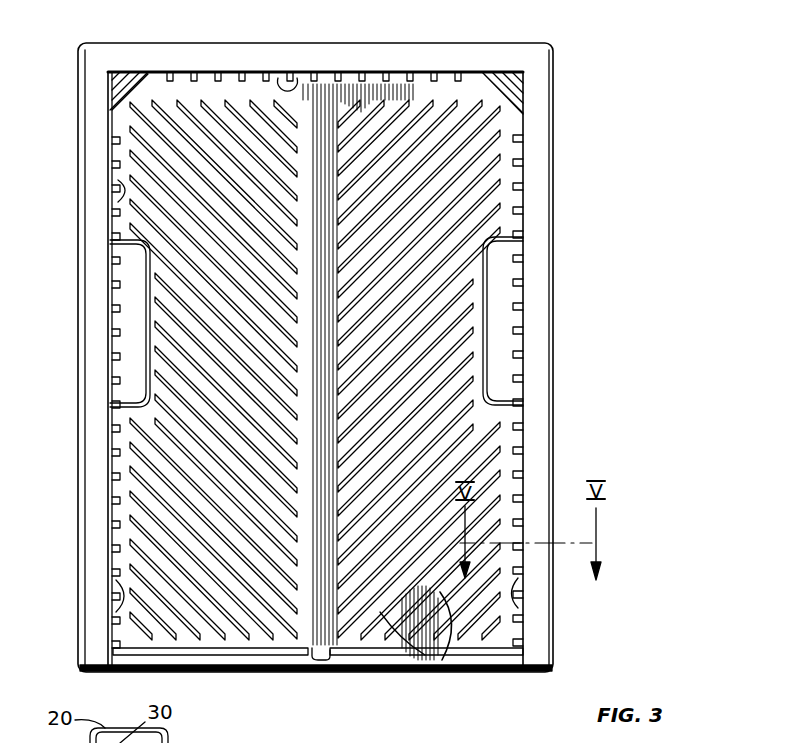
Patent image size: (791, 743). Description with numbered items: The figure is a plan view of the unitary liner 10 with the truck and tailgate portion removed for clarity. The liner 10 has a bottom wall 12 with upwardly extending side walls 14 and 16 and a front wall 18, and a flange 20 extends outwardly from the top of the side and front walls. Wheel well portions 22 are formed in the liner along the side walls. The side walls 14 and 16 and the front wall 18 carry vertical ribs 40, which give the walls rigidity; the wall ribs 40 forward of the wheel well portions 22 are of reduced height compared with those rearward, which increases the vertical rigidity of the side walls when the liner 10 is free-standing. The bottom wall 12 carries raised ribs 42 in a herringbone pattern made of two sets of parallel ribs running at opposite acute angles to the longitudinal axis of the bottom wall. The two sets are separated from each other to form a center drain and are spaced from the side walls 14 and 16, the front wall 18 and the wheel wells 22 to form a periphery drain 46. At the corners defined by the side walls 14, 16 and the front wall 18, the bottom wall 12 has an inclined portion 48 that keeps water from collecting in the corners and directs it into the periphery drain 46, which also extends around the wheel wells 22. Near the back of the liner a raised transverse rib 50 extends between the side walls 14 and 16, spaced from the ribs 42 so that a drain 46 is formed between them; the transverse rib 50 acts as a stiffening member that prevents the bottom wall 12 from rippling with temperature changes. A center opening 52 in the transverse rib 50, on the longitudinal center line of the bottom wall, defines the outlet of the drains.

The unitary liner 10 is at (586, 286).
The bottom wall 12 is at (442, 594).
The side wall 14 is at (115, 198).
The side wall 16 is at (513, 205).
The front wall 18 is at (276, 76).
The flange 20 is at (407, 50).
The wheel well portion 22 is at (123, 317).
The vertical ribs 40 is at (118, 613).
The raised ribs 42 is at (392, 620).
The periphery drain 46 is at (513, 150).
The inclined portion 48 is at (123, 92).
The transverse rib 50 is at (227, 655).
The center opening 52 is at (320, 658).